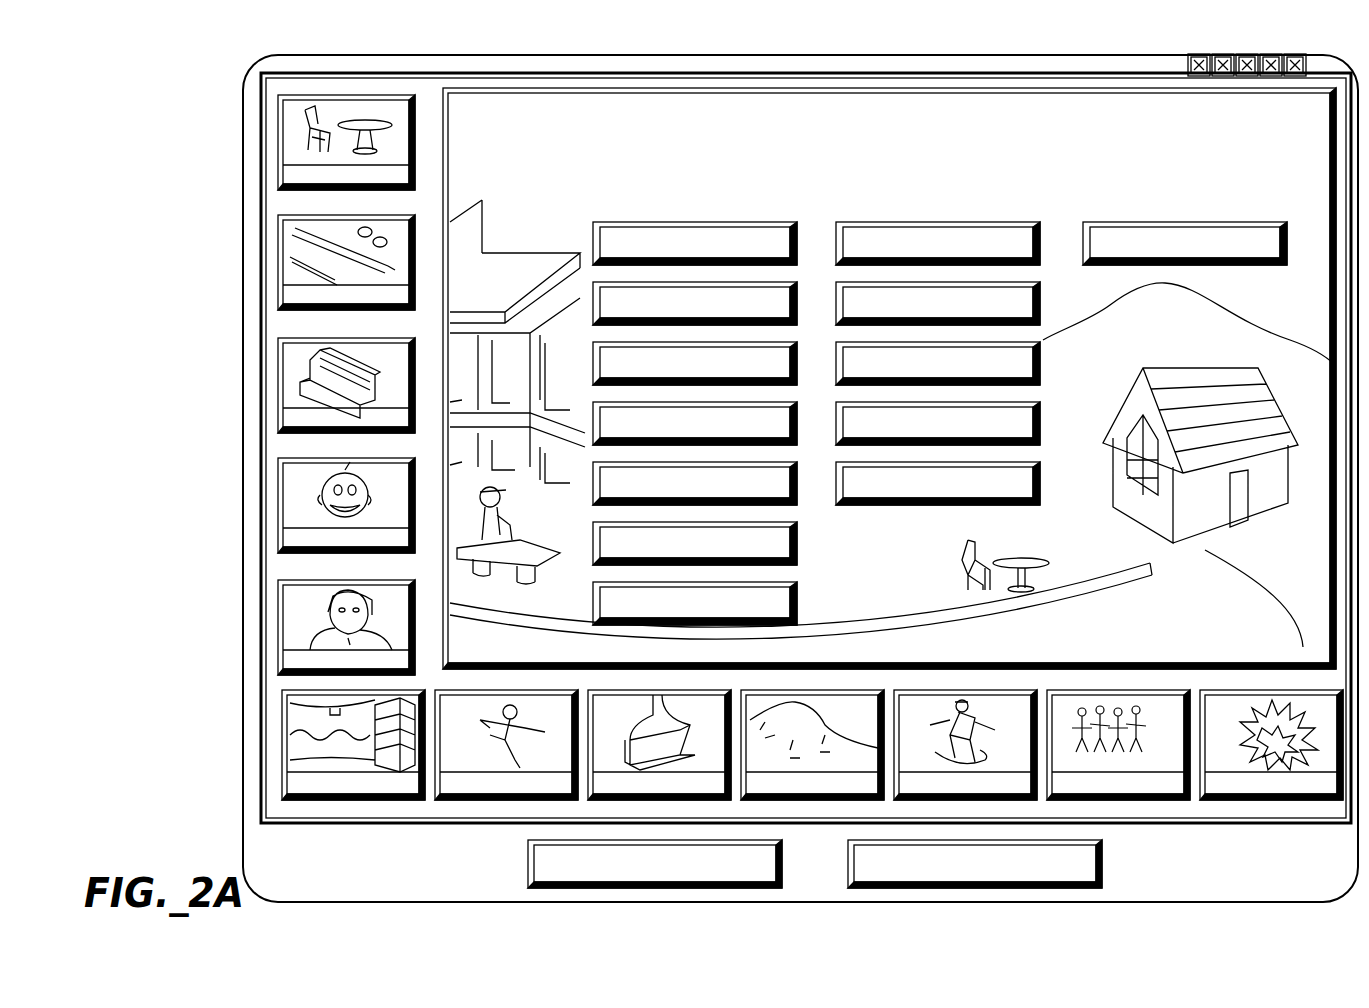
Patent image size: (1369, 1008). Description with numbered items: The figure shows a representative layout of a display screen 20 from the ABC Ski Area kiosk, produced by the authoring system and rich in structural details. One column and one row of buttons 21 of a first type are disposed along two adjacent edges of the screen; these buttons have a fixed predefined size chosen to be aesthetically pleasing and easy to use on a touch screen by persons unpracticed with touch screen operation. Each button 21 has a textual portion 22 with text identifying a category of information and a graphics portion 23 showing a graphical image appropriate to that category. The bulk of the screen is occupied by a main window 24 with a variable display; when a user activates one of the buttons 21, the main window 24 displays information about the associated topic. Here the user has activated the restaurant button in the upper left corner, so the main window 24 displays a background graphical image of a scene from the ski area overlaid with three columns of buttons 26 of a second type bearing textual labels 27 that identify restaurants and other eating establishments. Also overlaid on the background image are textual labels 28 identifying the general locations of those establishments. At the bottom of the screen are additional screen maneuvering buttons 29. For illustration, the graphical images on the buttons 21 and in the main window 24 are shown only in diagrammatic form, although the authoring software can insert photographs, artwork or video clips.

The display screen 20 is at (243, 225).
The buttons of a first type 21 is at (773, 454).
The textual portion 22 is at (346, 175).
The graphics portion 23 is at (348, 130).
The main window 24 is at (1170, 149).
The buttons of a second type 26 is at (947, 406).
The textual labels 27 is at (1007, 256).
The textual labels 28 is at (725, 197).
The screen maneuvering buttons 29 is at (528, 866).